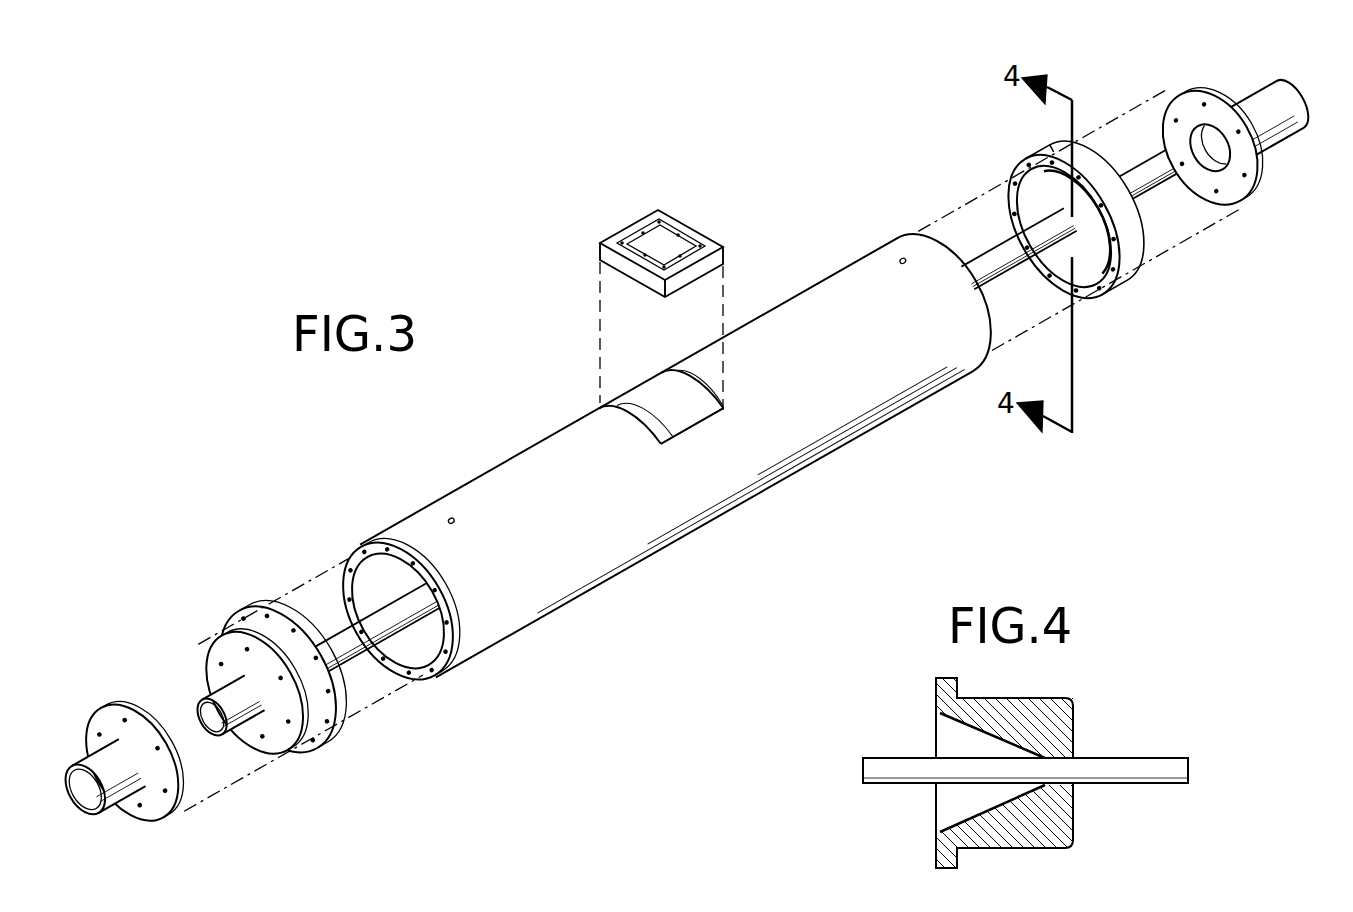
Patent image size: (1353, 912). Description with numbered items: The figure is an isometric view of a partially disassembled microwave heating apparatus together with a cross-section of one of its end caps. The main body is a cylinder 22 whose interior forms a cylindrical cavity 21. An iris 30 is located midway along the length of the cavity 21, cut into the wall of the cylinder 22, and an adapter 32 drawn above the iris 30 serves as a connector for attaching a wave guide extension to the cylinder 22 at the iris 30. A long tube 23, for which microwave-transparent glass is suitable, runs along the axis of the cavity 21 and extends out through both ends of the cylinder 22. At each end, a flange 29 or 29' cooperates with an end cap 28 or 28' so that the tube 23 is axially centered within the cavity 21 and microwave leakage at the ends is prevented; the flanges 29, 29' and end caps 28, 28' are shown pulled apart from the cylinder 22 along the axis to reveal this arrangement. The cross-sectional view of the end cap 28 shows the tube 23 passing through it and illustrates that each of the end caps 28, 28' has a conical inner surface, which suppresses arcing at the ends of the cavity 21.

In FIG. 3, the cylindrical cavity 21 is at (377, 563).
In FIG. 3, the cylinder 22 is at (437, 680).
In FIG. 3, the tube 23 is at (348, 632).
In FIG. 4, the tube 23 is at (1133, 787).
In FIG. 3, the end cap 28 is at (1106, 219).
In FIG. 4, the end cap 28 is at (1041, 768).
In FIG. 3, the end cap 28' is at (297, 680).
In FIG. 3, the flange 29 is at (1237, 146).
In FIG. 3, the flange 29' is at (127, 741).
In FIG. 3, the iris 30 is at (647, 403).
In FIG. 3, the adapter 32 is at (613, 240).